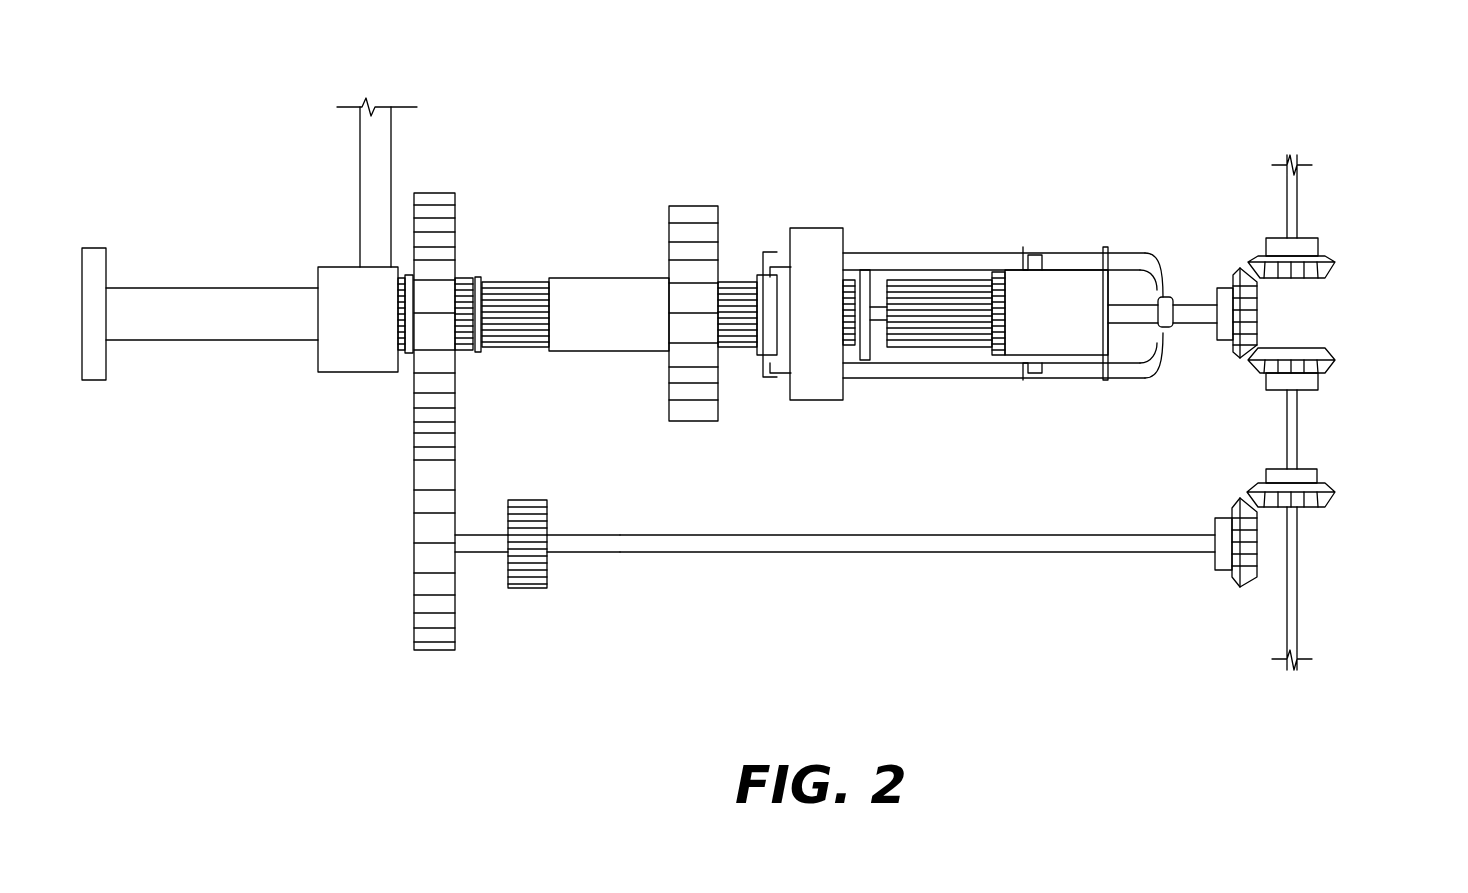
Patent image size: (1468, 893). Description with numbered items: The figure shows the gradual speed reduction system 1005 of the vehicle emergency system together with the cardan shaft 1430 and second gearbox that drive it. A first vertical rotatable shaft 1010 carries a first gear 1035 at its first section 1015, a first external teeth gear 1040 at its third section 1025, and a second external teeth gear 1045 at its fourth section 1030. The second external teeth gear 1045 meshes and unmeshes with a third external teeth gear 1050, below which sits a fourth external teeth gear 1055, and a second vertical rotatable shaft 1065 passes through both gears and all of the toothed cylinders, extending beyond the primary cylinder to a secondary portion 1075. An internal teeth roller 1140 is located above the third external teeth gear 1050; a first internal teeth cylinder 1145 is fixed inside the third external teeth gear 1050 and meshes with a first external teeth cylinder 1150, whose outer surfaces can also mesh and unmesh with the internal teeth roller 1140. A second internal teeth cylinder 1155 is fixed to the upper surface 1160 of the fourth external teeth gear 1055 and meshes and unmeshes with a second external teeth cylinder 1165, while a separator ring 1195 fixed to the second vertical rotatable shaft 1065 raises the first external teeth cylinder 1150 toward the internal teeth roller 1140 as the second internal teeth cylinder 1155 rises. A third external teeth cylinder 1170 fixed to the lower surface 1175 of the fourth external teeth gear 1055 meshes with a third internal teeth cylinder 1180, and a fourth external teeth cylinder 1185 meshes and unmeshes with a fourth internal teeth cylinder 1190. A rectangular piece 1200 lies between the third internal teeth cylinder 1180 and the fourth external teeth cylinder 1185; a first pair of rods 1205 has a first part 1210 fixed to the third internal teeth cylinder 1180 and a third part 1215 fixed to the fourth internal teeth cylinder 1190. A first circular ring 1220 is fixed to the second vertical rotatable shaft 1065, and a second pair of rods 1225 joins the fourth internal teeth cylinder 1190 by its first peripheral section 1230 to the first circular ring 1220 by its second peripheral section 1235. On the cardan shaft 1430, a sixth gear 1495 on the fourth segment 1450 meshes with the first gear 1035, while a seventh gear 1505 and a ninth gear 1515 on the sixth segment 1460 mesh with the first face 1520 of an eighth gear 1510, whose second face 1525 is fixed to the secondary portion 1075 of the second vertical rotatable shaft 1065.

The gradual speed reduction system 1005 is at (958, 43).
The first vertical rotatable shaft 1010 is at (835, 595).
The first section 1015 is at (1209, 558).
The third section 1025 is at (553, 558).
The fourth section 1030 is at (460, 561).
The first gear 1035 is at (1229, 588).
The first external teeth gear 1040 is at (525, 596).
The second external teeth gear 1045 is at (432, 659).
The third external teeth gear 1050 is at (447, 419).
The fourth external teeth gear 1055 is at (693, 198).
The second vertical rotatable shaft 1065 is at (877, 295).
The secondary portion 1075 is at (1212, 290).
The internal teeth roller 1140 is at (355, 380).
The first internal teeth cylinder 1145 is at (407, 265).
The first external teeth cylinder 1150 is at (470, 268).
The second internal teeth cylinder 1155 is at (596, 270).
The upper surface 1160 is at (680, 277).
The second external teeth cylinder 1165 is at (513, 353).
The third external teeth cylinder 1170 is at (748, 267).
The lower surface 1175 is at (719, 265).
The third internal teeth cylinder 1180 is at (757, 363).
The fourth external teeth cylinder 1185 is at (935, 347).
The fourth internal teeth cylinder 1190 is at (1067, 366).
The separator ring 1195 is at (483, 270).
The rectangular piece 1200 is at (817, 407).
The first pair of rods 1205 is at (1029, 307).
The first part 1210 is at (768, 376).
The third part 1215 is at (1022, 385).
The first circular ring 1220 is at (1170, 296).
The second pair of rods 1225 is at (1169, 307).
The first peripheral section 1230 is at (1107, 389).
The second peripheral section 1235 is at (1168, 338).
The cardan shaft 1430 is at (1303, 592).
The fourth segment 1450 is at (1308, 513).
The sixth segment 1460 is at (1305, 208).
The sixth gear 1495 is at (1350, 503).
The seventh gear 1505 is at (1343, 360).
The eighth gear 1510 is at (1310, 358).
The ninth gear 1515 is at (1342, 266).
The first face 1520 is at (1256, 298).
The second face 1525 is at (1228, 358).